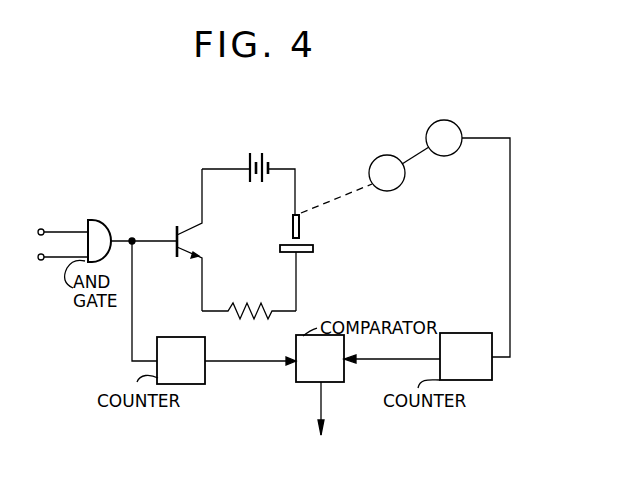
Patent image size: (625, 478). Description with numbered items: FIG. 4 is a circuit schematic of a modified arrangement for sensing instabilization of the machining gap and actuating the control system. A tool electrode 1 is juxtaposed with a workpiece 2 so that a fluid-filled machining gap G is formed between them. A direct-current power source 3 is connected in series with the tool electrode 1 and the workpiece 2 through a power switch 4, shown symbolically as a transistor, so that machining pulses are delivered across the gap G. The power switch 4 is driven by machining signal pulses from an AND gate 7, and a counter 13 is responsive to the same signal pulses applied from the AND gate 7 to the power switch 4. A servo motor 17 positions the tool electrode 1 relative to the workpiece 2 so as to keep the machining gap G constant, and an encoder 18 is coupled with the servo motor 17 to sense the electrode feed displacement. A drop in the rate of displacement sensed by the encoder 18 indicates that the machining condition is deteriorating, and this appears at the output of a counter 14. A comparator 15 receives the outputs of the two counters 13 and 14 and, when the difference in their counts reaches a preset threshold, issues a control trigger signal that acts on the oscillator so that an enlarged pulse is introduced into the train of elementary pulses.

The tool electrode 1 is at (291, 225).
The workpiece 2 is at (312, 253).
The direct-current power source 3 is at (258, 153).
The power switch 4 is at (191, 237).
The AND gate 7 is at (100, 218).
The machining gap G is at (301, 240).
The counter 13 is at (190, 387).
The counter 14 is at (475, 382).
The comparator 15 is at (333, 383).
The servo motor 17 is at (400, 186).
The encoder 18 is at (456, 124).